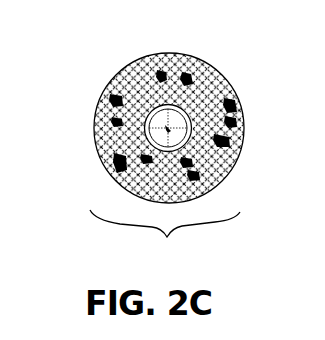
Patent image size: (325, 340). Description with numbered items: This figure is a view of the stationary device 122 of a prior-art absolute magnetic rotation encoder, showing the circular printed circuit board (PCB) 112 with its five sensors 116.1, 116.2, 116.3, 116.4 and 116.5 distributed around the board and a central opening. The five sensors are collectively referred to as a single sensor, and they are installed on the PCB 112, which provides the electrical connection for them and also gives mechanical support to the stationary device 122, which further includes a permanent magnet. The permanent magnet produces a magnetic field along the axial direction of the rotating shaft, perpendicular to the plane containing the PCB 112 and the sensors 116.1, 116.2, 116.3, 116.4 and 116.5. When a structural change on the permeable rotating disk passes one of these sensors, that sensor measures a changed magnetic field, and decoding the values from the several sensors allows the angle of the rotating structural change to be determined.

The printed circuit board 112 is at (93, 143).
The sensor 116.1 is at (162, 57).
The sensor 116.2 is at (240, 98).
The sensor 116.3 is at (216, 183).
The sensor 116.4 is at (130, 190).
The sensor 116.5 is at (105, 112).
The stationary device 122 is at (165, 237).